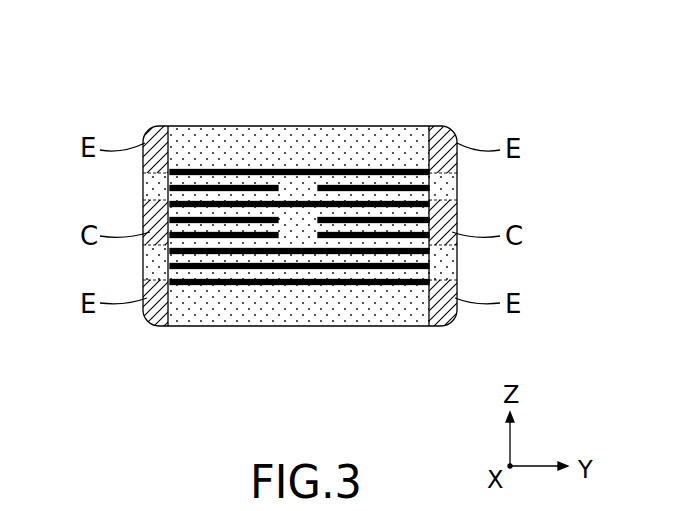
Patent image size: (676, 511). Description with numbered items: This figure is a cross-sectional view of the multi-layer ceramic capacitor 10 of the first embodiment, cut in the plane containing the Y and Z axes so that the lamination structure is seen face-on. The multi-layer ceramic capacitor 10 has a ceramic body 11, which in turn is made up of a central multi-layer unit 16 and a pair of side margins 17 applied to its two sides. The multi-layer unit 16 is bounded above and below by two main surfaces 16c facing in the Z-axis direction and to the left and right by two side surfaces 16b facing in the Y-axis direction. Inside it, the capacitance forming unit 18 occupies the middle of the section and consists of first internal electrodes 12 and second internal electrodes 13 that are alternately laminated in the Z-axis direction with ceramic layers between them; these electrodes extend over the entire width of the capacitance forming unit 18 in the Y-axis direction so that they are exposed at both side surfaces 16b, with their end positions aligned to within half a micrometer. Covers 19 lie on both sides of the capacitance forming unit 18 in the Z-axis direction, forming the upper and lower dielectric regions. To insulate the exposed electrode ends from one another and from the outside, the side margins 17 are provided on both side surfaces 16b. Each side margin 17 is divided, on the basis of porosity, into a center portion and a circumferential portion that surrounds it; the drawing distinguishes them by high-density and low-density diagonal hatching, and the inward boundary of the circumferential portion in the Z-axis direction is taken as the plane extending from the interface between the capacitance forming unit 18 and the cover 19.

The multi-layer ceramic capacitor 10 is at (330, 169).
The ceramic body 11 is at (434, 85).
The first internal electrodes 12 is at (250, 190).
The second internal electrodes 13 is at (370, 175).
The multi-layer unit 16 is at (415, 340).
The side surfaces 16b is at (170, 183).
The main surfaces 16c is at (198, 126).
The side margins 17 is at (169, 335).
The capacitance forming unit 18 is at (317, 241).
The covers 19 is at (317, 163).